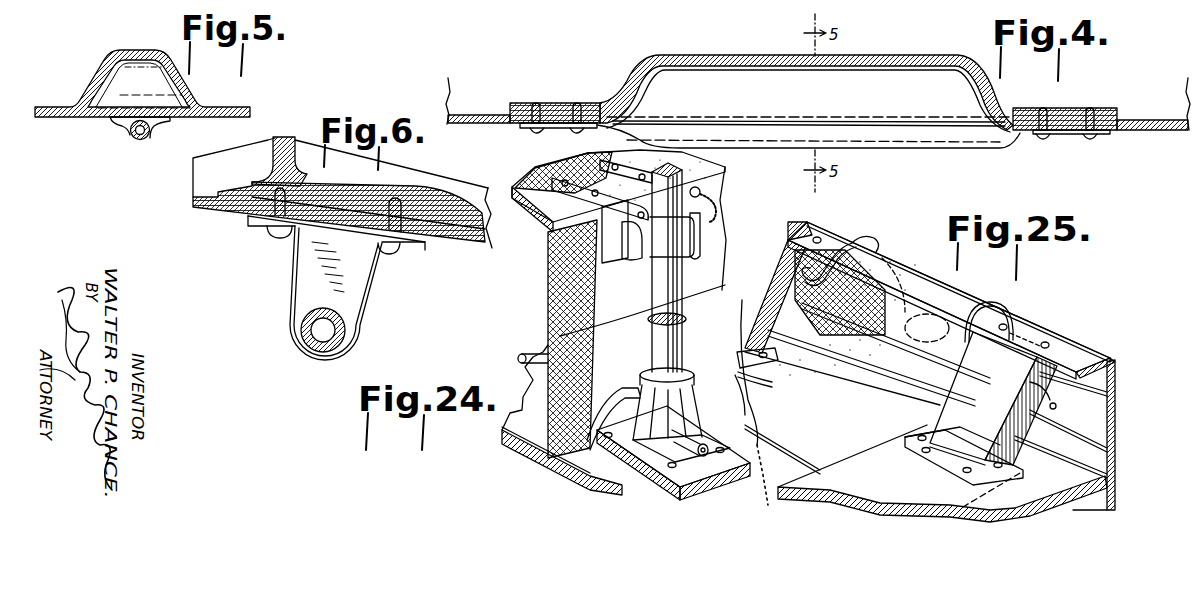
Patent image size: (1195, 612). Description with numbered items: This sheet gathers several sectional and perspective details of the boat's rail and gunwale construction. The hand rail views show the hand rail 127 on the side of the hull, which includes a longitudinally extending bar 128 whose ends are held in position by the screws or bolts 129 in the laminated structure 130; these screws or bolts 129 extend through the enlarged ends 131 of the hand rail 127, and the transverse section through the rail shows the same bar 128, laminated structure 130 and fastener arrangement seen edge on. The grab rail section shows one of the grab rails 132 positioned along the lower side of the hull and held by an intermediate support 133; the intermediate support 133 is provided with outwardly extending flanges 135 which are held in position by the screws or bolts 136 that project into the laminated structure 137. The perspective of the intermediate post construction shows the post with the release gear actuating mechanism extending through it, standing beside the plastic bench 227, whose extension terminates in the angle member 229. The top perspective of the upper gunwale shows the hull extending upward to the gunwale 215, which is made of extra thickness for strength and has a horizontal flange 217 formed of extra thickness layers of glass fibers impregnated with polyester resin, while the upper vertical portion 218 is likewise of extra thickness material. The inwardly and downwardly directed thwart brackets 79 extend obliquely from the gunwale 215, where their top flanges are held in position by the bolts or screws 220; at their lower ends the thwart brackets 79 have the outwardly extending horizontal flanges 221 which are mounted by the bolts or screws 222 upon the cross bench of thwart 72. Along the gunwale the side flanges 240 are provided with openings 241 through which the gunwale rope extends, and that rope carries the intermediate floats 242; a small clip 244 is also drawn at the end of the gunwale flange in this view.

In FIG. 25, the cross bench of thwart 72 is at (845, 475).
In FIG. 25, the thwart brackets 79 is at (958, 400).
In FIG. 4, the hand rail 127 is at (1005, 91).
In FIG. 5, the longitudinally extending bar 128 is at (147, 141).
In FIG. 4, the longitudinally extending bar 128 is at (900, 150).
In FIG. 4, the screws or bolts 129 is at (578, 137).
In FIG. 4, the laminated structure 130 is at (553, 101).
In FIG. 4, the enlarged ends of the hand rails 131 is at (520, 127).
In FIG. 6, the grab rails 132 is at (301, 330).
In FIG. 6, the intermediate supports 133 is at (305, 283).
In FIG. 6, the outwardly extending flanges 135 is at (250, 223).
In FIG. 6, the screws or bolts 136 is at (272, 240).
In FIG. 6, the laminated structure 137 is at (278, 167).
In FIG. 25, the gunwale 215 is at (1116, 363).
In FIG. 25, the horizontal flange 217 is at (1082, 357).
In FIG. 25, the upper vertical portion 218 is at (1116, 386).
In FIG. 25, the bolts or screws 220 is at (1044, 342).
In FIG. 25, the outwardly extending horizontal flanges 221 is at (948, 456).
In FIG. 25, the bolts or screws 222 is at (905, 434).
In FIG. 25, the plastic bench 227 is at (745, 427).
In FIG. 25, the angle member 229 is at (1090, 457).
In FIG. 25, the side flanges 240 is at (782, 310).
In FIG. 25, the openings 241 is at (1036, 383).
In FIG. 25, the intermediate floats 242 is at (878, 365).
In FIG. 25, the clip 244 is at (802, 273).